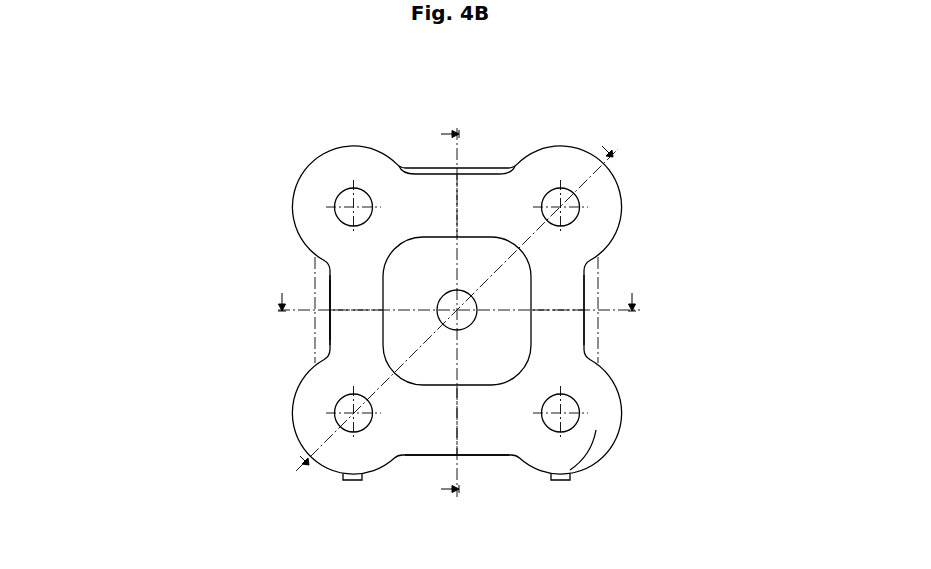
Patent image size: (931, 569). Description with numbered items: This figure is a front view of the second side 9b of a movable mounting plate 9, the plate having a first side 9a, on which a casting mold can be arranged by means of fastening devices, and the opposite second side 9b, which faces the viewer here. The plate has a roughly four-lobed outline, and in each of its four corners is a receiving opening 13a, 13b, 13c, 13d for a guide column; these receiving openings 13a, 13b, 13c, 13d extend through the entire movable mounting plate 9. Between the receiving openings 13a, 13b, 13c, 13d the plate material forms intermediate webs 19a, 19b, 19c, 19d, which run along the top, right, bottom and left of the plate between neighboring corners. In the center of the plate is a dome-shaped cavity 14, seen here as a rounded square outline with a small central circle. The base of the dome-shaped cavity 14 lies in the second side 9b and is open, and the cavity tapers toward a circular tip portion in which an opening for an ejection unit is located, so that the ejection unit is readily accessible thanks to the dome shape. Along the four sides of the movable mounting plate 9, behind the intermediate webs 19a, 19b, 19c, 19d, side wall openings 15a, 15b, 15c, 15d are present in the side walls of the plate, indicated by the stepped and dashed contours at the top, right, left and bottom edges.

The movable mounting plate 9 is at (236, 205).
The first side 9a is at (318, 299).
The second side 9b is at (583, 448).
The receiving opening 13a is at (345, 195).
The receiving opening 13b is at (572, 200).
The receiving opening 13c is at (567, 405).
The receiving opening 13d is at (345, 404).
The dome-shaped cavity 14 is at (490, 246).
The side wall opening 15a is at (475, 168).
The side wall opening 15b is at (590, 327).
The side wall opening 15c is at (322, 330).
The side wall opening 15d is at (490, 463).
The intermediate web 19a is at (437, 190).
The intermediate web 19b is at (545, 283).
The intermediate web 19c is at (418, 419).
The intermediate web 19d is at (350, 276).